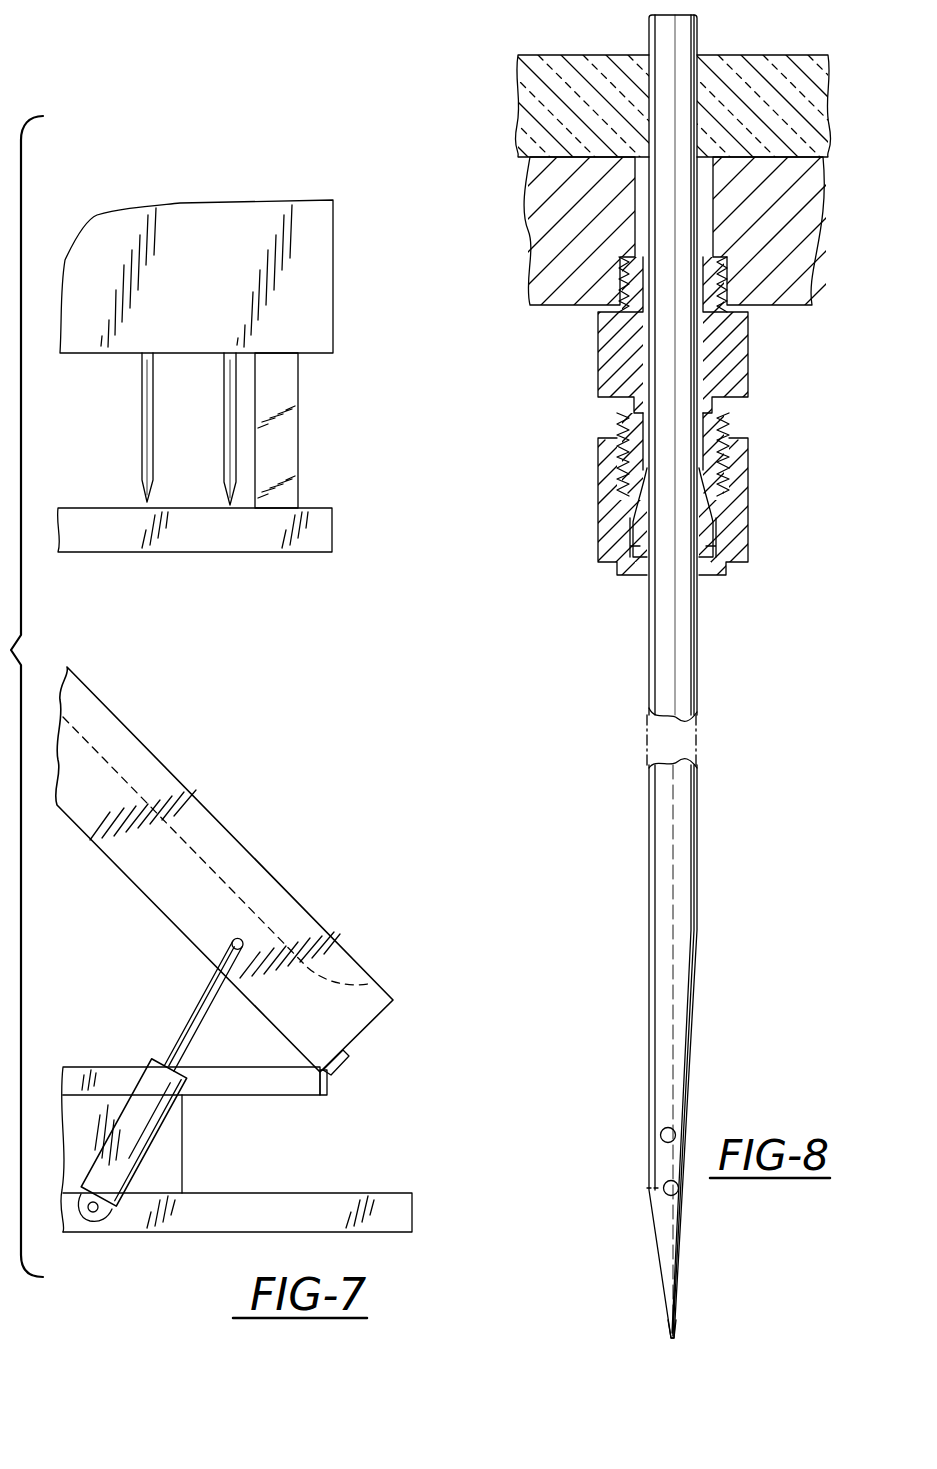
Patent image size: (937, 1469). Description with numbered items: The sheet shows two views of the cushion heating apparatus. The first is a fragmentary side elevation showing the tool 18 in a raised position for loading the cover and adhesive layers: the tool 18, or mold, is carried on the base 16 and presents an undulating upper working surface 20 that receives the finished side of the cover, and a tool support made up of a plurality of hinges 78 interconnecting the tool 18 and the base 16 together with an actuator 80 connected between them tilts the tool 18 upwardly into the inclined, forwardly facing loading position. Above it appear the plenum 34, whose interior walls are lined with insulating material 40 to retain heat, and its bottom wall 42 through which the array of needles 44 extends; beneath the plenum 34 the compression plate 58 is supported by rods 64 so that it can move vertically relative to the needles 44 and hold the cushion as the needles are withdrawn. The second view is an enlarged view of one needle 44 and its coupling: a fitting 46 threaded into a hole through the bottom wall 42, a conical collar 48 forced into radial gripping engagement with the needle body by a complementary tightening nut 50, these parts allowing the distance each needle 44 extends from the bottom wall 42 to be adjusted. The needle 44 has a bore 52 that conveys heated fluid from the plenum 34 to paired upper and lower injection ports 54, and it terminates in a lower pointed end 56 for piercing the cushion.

In FIG. 7, the base 16 is at (413, 1213).
In FIG. 7, the tool 18 is at (274, 869).
In FIG. 7, the upper working surface 20 is at (226, 880).
In FIG. 7, the plenum chamber 34 is at (317, 241).
In FIG. 8, the insulating material 40 is at (768, 70).
In FIG. 8, the bottom wall 42 is at (532, 180).
In FIG. 7, the needles 44 is at (227, 403).
In FIG. 8, the needles 44 is at (687, 678).
In FIG. 8, the fitting 46 is at (607, 345).
In FIG. 8, the conical collar 48 is at (720, 528).
In FIG. 8, the tightening nut 50 is at (745, 543).
In FIG. 8, the bore 52 is at (670, 722).
In FIG. 8, the injection ports 54 is at (663, 1183).
In FIG. 8, the lower pointed end 56 is at (675, 1340).
In FIG. 7, the compression plate 58 is at (322, 535).
In FIG. 7, the rods 64 is at (287, 407).
In FIG. 7, the hinges 78 is at (327, 1072).
In FIG. 7, the actuator 80 is at (117, 1203).